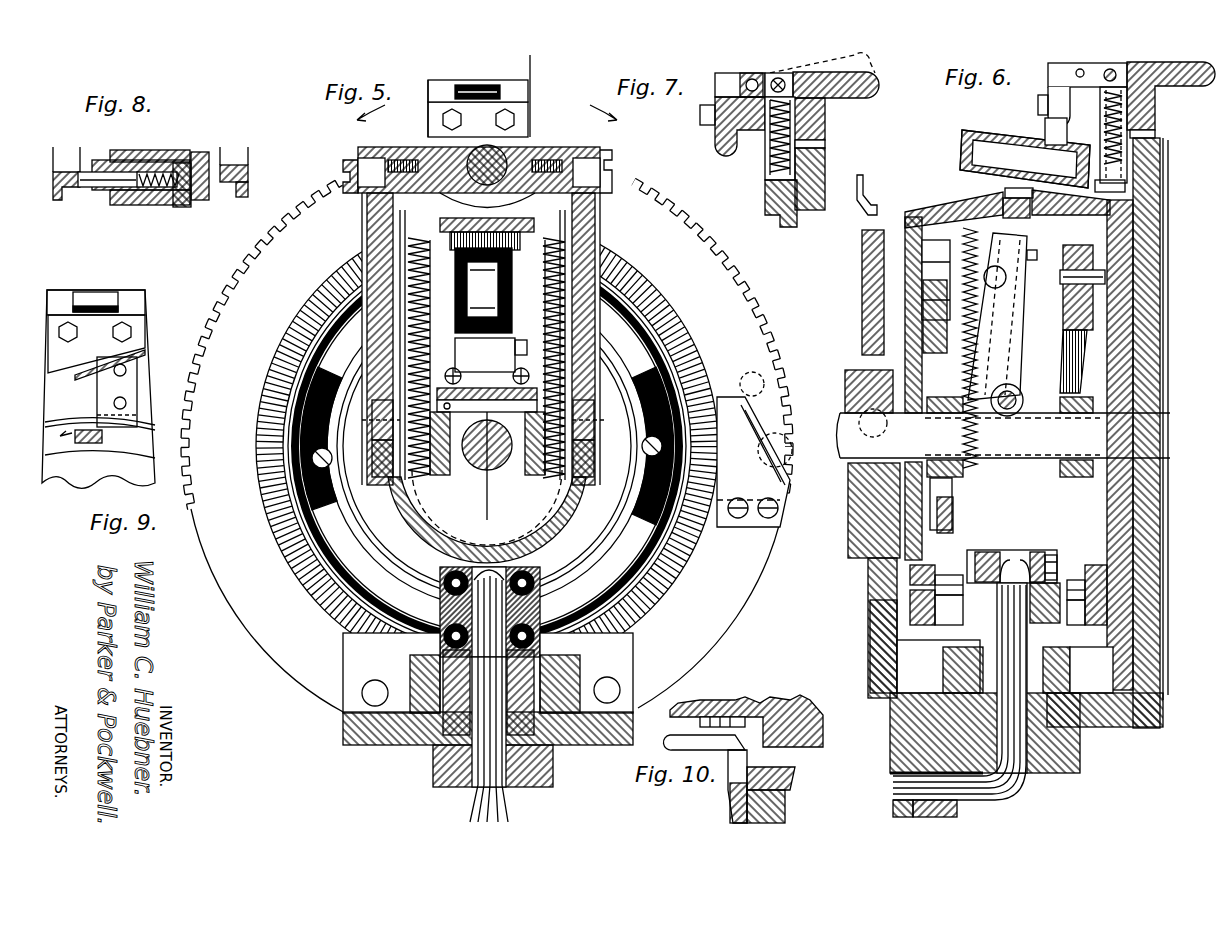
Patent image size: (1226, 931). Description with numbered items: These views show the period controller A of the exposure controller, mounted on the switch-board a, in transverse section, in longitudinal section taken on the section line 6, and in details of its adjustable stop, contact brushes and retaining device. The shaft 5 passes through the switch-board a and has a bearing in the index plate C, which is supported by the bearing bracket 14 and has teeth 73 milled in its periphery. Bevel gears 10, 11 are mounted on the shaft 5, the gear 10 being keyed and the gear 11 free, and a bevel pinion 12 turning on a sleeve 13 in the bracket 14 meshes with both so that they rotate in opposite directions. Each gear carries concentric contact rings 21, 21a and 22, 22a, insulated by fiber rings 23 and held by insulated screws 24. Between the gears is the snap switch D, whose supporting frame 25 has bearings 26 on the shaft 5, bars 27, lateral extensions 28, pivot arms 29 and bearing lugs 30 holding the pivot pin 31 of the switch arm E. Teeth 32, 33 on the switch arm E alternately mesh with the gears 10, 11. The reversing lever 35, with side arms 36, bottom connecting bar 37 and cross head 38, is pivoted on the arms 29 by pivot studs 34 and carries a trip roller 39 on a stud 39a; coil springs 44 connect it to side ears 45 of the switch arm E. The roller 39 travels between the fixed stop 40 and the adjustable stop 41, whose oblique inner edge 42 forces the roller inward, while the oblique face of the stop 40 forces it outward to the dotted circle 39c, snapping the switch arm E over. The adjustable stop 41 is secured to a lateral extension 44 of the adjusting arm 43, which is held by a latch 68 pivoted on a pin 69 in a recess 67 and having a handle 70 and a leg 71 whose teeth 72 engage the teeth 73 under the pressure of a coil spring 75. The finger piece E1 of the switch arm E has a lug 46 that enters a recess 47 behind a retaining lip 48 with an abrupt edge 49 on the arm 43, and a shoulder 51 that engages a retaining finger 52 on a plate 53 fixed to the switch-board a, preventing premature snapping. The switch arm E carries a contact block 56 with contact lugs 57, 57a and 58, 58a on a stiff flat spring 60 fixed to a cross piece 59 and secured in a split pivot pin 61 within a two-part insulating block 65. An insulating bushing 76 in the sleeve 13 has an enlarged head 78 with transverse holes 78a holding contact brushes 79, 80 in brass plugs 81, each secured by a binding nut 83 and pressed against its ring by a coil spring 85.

In FIG. 5, the shaft 5 is at (475, 466).
In FIG. 6, the shaft 5 is at (1004, 433).
In FIG. 5, the section line 6 is at (535, 96).
In FIG. 6, the section line 6 is at (958, 701).
In FIG. 6, the bevel gear 10 is at (862, 245).
In FIG. 10, the bevel gear 10 is at (790, 790).
In FIG. 5, the bevel gear 11 is at (315, 585).
In FIG. 6, the bevel gear 11 is at (1140, 226).
In FIG. 5, the bevel pinion 12 is at (572, 666).
In FIG. 6, the bevel pinion 12 is at (928, 655).
In FIG. 5, the sleeve 13 is at (553, 692).
In FIG. 6, the sleeve 13 is at (1060, 676).
In FIG. 5, the bearing bracket 14 is at (580, 725).
In FIG. 6, the bearing bracket 14 is at (1100, 720).
In FIG. 6, the contact ring 21 is at (930, 612).
In FIG. 6, the contact ring 21a is at (912, 572).
In FIG. 8, the contact ring 21a is at (60, 205).
In FIG. 5, the contact ring 22 is at (305, 505).
In FIG. 6, the contact ring 22 is at (1115, 618).
In FIG. 5, the contact ring 22a is at (312, 533).
In FIG. 6, the contact ring 22a is at (1090, 582).
In FIG. 8, the contact ring 22a is at (250, 170).
In FIG. 5, the annular fiber rings 23 is at (332, 615).
In FIG. 6, the annular fiber rings 23 is at (1095, 298).
In FIG. 5, the insulated screws 24 is at (312, 458).
In FIG. 6, the insulated screws 24 is at (935, 598).
In FIG. 6, the supporting frame 25 is at (1015, 373).
In FIG. 5, the bearings 26 is at (487, 460).
In FIG. 6, the bearings 26 is at (963, 470).
In FIG. 5, the bars 27 is at (489, 457).
In FIG. 6, the bars 27 is at (1050, 462).
In FIG. 5, the lateral extensions 28 is at (384, 475).
In FIG. 6, the lateral extensions 28 is at (1060, 444).
In FIG. 5, the pivot arms 29 is at (397, 233).
In FIG. 6, the pivot arms 29 is at (1035, 220).
In FIG. 5, the bearing lugs 30 is at (445, 376).
In FIG. 6, the bearing lugs 30 is at (1020, 398).
In FIG. 5, the pivot pin 31 is at (487, 397).
In FIG. 6, the pivot pin 31 is at (1008, 412).
In FIG. 5, the teeth 32 is at (470, 232).
In FIG. 6, the teeth 32 is at (903, 262).
In FIG. 10, the teeth 32 is at (790, 815).
In FIG. 6, the teeth 33 is at (1010, 198).
In FIG. 5, the pivot studs 34 is at (371, 172).
In FIG. 5, the reversing lever 35 is at (607, 194).
In FIG. 6, the reversing lever 35 is at (955, 492).
In FIG. 5, the side arms 36 is at (352, 285).
In FIG. 6, the side arms 36 is at (1010, 350).
In FIG. 5, the bottom connecting bar 37 is at (429, 553).
In FIG. 6, the bottom connecting bar 37 is at (955, 512).
In FIG. 5, the cross head 38 is at (410, 150).
In FIG. 6, the cross head 38 is at (978, 130).
In FIG. 5, the trip roller 39 is at (485, 150).
In FIG. 6, the trip roller 39 is at (1082, 131).
In FIG. 5, the stud 39a is at (593, 126).
In FIG. 6, the stud 39a is at (1013, 151).
In FIG. 5, the dotted circle 39c is at (797, 453).
In FIG. 5, the fixed stop 40 is at (753, 462).
In FIG. 5, the adjustable stop 41 is at (481, 152).
In FIG. 6, the adjustable stop 41 is at (1050, 92).
In FIG. 7, the adjustable stop 41 is at (715, 138).
In FIG. 9, the adjustable stop 41 is at (96, 344).
In FIG. 5, the oblique inner edge 42 is at (525, 140).
In FIG. 6, the oblique inner edge 42 is at (1040, 123).
In FIG. 7, the oblique inner edge 42 is at (722, 148).
In FIG. 9, the oblique inner edge 42 is at (140, 356).
In FIG. 5, the adjusting arm 43 is at (372, 214).
In FIG. 6, the adjusting arm 43 is at (1145, 177).
In FIG. 7, the adjusting arm 43 is at (778, 222).
In FIG. 9, the adjusting arm 43 is at (100, 461).
In FIG. 5, the lateral extension 44 is at (398, 505).
In FIG. 6, the lateral extension 44 is at (1100, 100).
In FIG. 7, the lateral extension 44 is at (715, 97).
In FIG. 5, the side ears 45 is at (366, 246).
In FIG. 6, the lug 46 is at (1079, 199).
In FIG. 9, the lug 46 is at (85, 443).
In FIG. 6, the recess 47 is at (1125, 207).
In FIG. 9, the recess 47 is at (72, 423).
In FIG. 6, the retaining lip 48 is at (1122, 195).
In FIG. 9, the retaining lip 48 is at (118, 428).
In FIG. 9, the abrupt edge 49 is at (97, 393).
In FIG. 6, the shoulder 51 is at (862, 215).
In FIG. 10, the shoulder 51 is at (735, 745).
In FIG. 10, the retaining finger 52 is at (760, 748).
In FIG. 6, the plate 53 is at (936, 275).
In FIG. 10, the plate 53 is at (727, 705).
In FIG. 5, the contact block 56 is at (483, 290).
In FIG. 6, the contact lug 57 is at (1030, 256).
In FIG. 6, the contact lug 57a is at (1041, 324).
In FIG. 5, the contact lug 58 is at (486, 358).
In FIG. 6, the contact lug 58 is at (976, 348).
In FIG. 5, the contact lug 58a is at (486, 357).
In FIG. 5, the cross piece 59 is at (520, 345).
In FIG. 5, the stiff flat spring 60 is at (485, 355).
In FIG. 6, the stiff flat spring 60 is at (1000, 282).
In FIG. 6, the split pivot pin 61 is at (1022, 254).
In FIG. 6, the two-part insulating block 65 is at (1014, 314).
In FIG. 5, the recess 67 is at (530, 95).
In FIG. 7, the recess 67 is at (728, 73).
In FIG. 9, the recess 67 is at (80, 290).
In FIG. 5, the latch 68 is at (472, 86).
In FIG. 6, the latch 68 is at (1171, 96).
In FIG. 9, the latch 68 is at (118, 292).
In FIG. 6, the pin 69 is at (1081, 72).
In FIG. 7, the pin 69 is at (778, 80).
In FIG. 6, the handle 70 is at (1195, 73).
In FIG. 7, the handle 70 is at (875, 85).
In FIG. 5, the leg 71 is at (450, 561).
In FIG. 6, the leg 71 is at (1144, 106).
In FIG. 7, the leg 71 is at (828, 112).
In FIG. 6, the teeth 72 is at (1156, 133).
In FIG. 7, the teeth 72 is at (826, 137).
In FIG. 5, the teeth 73 is at (244, 276).
In FIG. 7, the teeth 73 is at (826, 150).
In FIG. 7, the coil spring 75 is at (768, 162).
In FIG. 5, the insulating bushing 76 is at (556, 752).
In FIG. 6, the insulating bushing 76 is at (950, 672).
In FIG. 8, the insulating bushing 76 is at (148, 160).
In FIG. 5, the enlarged head 78 is at (528, 565).
In FIG. 6, the enlarged head 78 is at (1015, 552).
In FIG. 8, the transverse holes 78a is at (175, 152).
In FIG. 5, the contact brushes 79 is at (605, 642).
In FIG. 6, the contact brushes 79 is at (985, 552).
In FIG. 8, the contact brushes 79 is at (90, 187).
In FIG. 5, the brushes 80 is at (497, 601).
In FIG. 6, the brushes 80 is at (1057, 625).
In FIG. 8, the plugs 81 is at (150, 190).
In FIG. 6, the binding nut 83 is at (1050, 556).
In FIG. 8, the binding nut 83 is at (200, 155).
In FIG. 8, the coil spring 85 is at (175, 207).
In FIG. 5, the period controller A is at (487, 446).
In FIG. 6, the period controller A is at (1182, 491).
In FIG. 5, the index plate C is at (488, 603).
In FIG. 6, the index plate C is at (1178, 331).
In FIG. 7, the index plate C is at (824, 170).
In FIG. 5, the snap switch D is at (598, 228).
In FIG. 6, the snap switch D is at (941, 141).
In FIG. 5, the switch arm E is at (480, 243).
In FIG. 6, the switch arm E is at (1037, 281).
In FIG. 5, the finger piece E1 is at (455, 200).
In FIG. 6, the finger piece E1 is at (896, 161).
In FIG. 9, the finger piece E1 is at (129, 461).
In FIG. 10, the finger piece E1 is at (735, 815).
In FIG. 6, the switch-board a is at (1115, 680).
In FIG. 10, the switch-board a is at (770, 703).